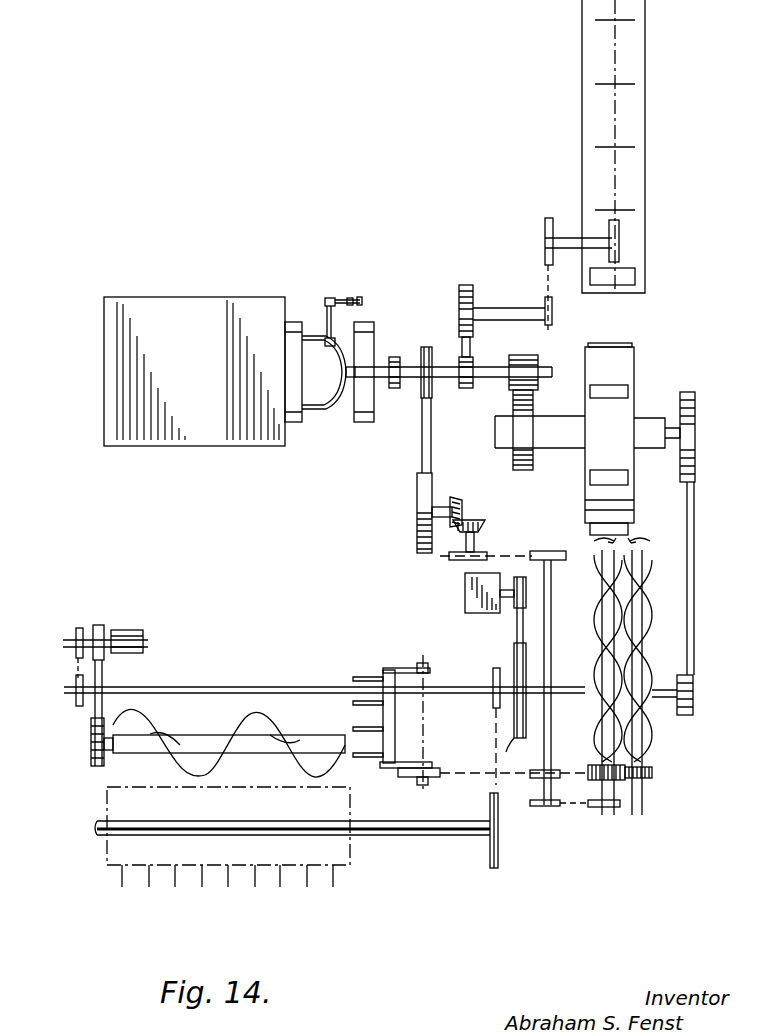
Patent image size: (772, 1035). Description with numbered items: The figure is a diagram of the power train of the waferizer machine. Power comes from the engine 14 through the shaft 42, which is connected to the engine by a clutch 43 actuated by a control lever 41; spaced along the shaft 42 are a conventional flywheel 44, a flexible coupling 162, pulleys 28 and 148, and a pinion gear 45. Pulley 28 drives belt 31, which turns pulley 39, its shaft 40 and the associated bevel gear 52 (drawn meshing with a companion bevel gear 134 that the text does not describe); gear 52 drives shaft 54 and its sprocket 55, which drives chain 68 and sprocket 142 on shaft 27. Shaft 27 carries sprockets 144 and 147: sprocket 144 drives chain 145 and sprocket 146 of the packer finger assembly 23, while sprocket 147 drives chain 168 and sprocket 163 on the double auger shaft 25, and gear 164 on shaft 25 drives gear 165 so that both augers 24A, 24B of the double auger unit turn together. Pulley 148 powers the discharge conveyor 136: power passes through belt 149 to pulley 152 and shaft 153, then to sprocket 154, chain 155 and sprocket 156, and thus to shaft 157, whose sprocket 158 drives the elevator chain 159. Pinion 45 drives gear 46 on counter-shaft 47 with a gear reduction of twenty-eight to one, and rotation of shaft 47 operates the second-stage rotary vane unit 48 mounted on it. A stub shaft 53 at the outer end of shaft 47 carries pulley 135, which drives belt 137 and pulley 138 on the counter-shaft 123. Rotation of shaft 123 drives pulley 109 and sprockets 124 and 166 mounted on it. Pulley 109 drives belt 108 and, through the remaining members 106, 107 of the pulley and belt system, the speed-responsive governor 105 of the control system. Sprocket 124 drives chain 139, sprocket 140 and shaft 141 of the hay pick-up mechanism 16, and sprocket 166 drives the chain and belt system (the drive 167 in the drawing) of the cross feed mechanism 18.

The engine 14 is at (153, 298).
The clutch 43 is at (318, 410).
The control lever 41 is at (336, 297).
The flywheel 44 is at (373, 324).
The shaft 42 is at (480, 370).
The flexible coupling 162 is at (393, 356).
The pulley 28 is at (420, 393).
The belt 31 is at (422, 451).
The pulley 152 is at (459, 301).
The belt 149 is at (463, 340).
The pulley 148 is at (464, 389).
The shaft 153 is at (524, 312).
The sprocket 154 is at (553, 303).
The chain 155 is at (547, 279).
The sprocket 156 is at (545, 232).
The shaft 157 is at (571, 238).
The sprocket 158 is at (620, 232).
The elevator chain 159 is at (618, 195).
The discharge conveyor 136 is at (645, 152).
The pinion gear 45 is at (535, 357).
The gear 46 is at (535, 404).
The counter-shaft 47 is at (545, 442).
The rotary vane unit 48 is at (636, 370).
The stub shaft 53 is at (672, 428).
The pulley 135 is at (695, 468).
The belt 137 is at (694, 542).
The pulley 138 is at (694, 692).
The pulley 39 is at (416, 500).
The shaft 40 is at (440, 507).
The bevel gear 52 is at (458, 504).
The bevel gear 134 is at (478, 522).
The shaft 54 is at (476, 544).
The sprocket 55 is at (455, 562).
The chain 68 is at (516, 553).
The sprocket 142 is at (550, 551).
The shaft 27 is at (552, 662).
The speed-responsive governor 105 is at (466, 604).
The pulley and belt system 106 is at (507, 600).
The pulley and belt system 107 is at (532, 570).
The belt 108 is at (516, 632).
The pulley 109 is at (519, 753).
The counter-shaft 123 is at (255, 690).
The sprocket 124 is at (493, 695).
The chain 139 is at (496, 752).
The packer finger assembly 23 is at (380, 667).
The sprocket 146 is at (430, 780).
The chain 145 is at (490, 775).
The sprocket 144 is at (556, 778).
The sprocket 147 is at (548, 806).
The chain 168 is at (574, 806).
The sprocket 163 is at (614, 808).
The gear 164 is at (620, 778).
The gear 165 is at (653, 776).
The auger 24B is at (603, 578).
The auger 24A is at (644, 572).
The double auger shaft 25 is at (606, 751).
The drive assembly 167 is at (100, 617).
The sprocket 166 is at (76, 690).
The cross feed mechanism 18 is at (282, 716).
The shaft 141 is at (465, 838).
The sprocket 140 is at (499, 855).
The hay pick-up mechanism 16 is at (258, 868).